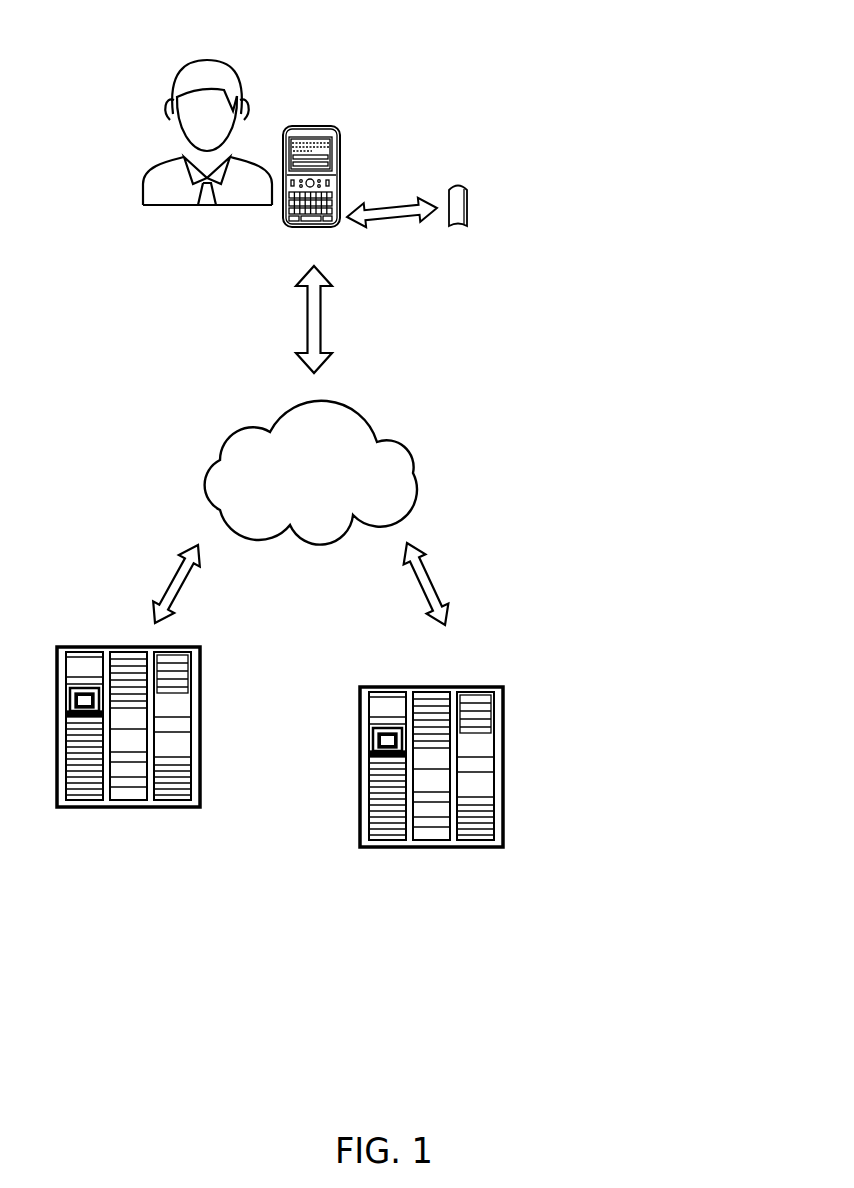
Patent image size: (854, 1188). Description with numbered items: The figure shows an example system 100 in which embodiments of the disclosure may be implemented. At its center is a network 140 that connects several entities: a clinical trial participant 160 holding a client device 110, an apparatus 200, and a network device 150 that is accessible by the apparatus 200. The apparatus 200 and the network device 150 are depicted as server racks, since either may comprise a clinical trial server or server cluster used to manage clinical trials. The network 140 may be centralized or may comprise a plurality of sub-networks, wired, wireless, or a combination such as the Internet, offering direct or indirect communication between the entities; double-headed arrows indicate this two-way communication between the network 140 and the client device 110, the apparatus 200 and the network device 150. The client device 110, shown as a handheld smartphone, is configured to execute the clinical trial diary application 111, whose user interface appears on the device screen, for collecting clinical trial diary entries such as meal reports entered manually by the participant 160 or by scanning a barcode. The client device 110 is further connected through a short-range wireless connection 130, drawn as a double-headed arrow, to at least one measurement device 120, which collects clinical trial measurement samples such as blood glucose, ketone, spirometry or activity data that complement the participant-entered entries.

The system 100 is at (673, 963).
The client device 110 is at (336, 153).
The clinical trial diary application 111 is at (324, 141).
The measurement device 120 is at (467, 195).
The short-range wireless connection 130 is at (395, 219).
The network 140 is at (322, 490).
The network device 150 is at (503, 698).
The clinical trial participant 160 is at (207, 60).
The apparatus 200 is at (200, 661).